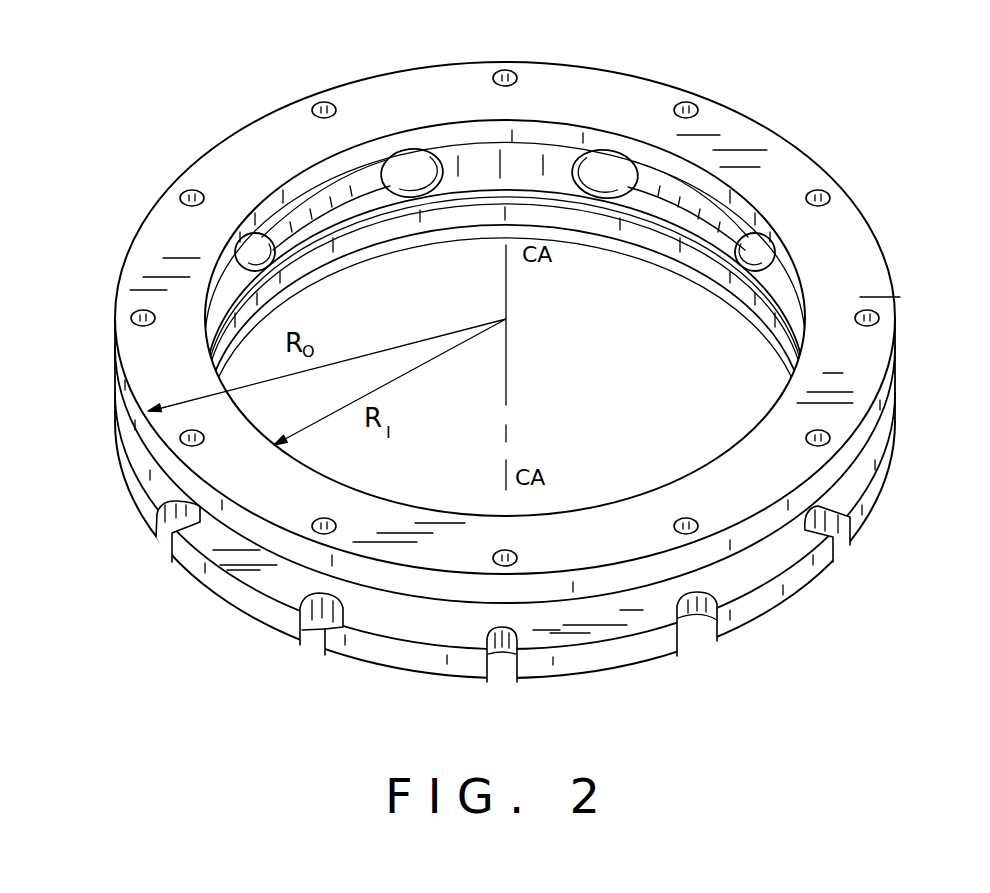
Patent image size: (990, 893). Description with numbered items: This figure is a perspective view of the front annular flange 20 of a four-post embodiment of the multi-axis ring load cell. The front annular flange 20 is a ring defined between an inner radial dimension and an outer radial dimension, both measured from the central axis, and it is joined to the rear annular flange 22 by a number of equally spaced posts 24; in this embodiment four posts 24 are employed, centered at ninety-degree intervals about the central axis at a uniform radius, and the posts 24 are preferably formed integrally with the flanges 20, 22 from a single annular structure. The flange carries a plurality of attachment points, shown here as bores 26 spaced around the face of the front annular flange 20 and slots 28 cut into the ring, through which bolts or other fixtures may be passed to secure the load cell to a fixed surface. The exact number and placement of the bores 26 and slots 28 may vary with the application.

The front annular flange 20 is at (783, 167).
The rear annular flange 22 is at (433, 620).
The posts 24 is at (533, 158).
The bores 26 is at (320, 101).
The slots 28 is at (165, 538).